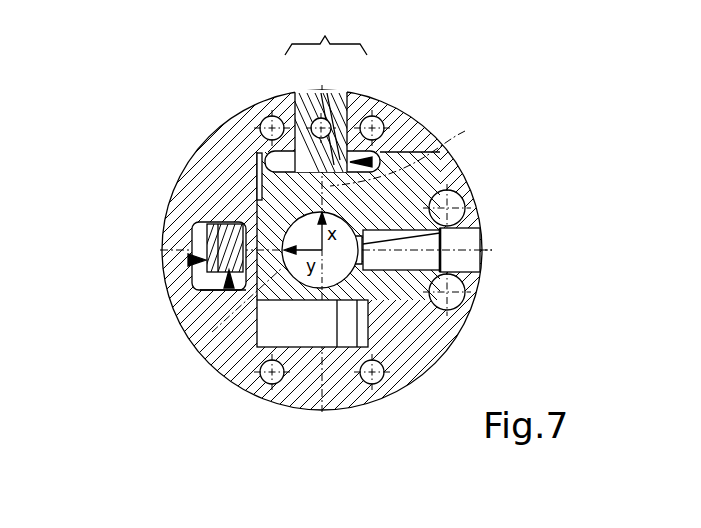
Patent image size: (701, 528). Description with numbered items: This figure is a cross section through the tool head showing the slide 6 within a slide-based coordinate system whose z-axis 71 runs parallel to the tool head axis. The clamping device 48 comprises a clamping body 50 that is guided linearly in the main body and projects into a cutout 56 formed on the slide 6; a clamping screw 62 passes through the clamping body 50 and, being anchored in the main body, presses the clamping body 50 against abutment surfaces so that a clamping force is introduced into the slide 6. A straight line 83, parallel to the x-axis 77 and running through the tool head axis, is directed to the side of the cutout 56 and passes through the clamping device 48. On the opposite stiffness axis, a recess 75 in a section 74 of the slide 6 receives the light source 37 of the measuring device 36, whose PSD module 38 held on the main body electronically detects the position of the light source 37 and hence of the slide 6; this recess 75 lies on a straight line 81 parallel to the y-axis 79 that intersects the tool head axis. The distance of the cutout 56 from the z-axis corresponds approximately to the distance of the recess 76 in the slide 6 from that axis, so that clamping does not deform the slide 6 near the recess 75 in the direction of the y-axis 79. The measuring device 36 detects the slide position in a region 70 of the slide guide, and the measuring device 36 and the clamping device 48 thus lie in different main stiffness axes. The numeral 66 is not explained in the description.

The slide 6 is at (455, 322).
The measuring device 36 is at (138, 298).
The light source 37 is at (138, 298).
The PSD module 38 is at (213, 282).
The clamping device 48 is at (326, 33).
The clamping body 50 is at (311, 120).
The cutout 56 is at (396, 165).
The clamping screw 62 is at (330, 135).
The bore 66 is at (342, 125).
The region 70 is at (229, 289).
The z-axis 71 is at (283, 198).
The section 74 is at (198, 233).
The recess 75 is at (188, 259).
The recess 76 is at (223, 222).
The x-axis 77 is at (481, 240).
The y-axis 79 is at (283, 198).
The straight line 81 is at (212, 332).
The straight line 83 is at (410, 151).